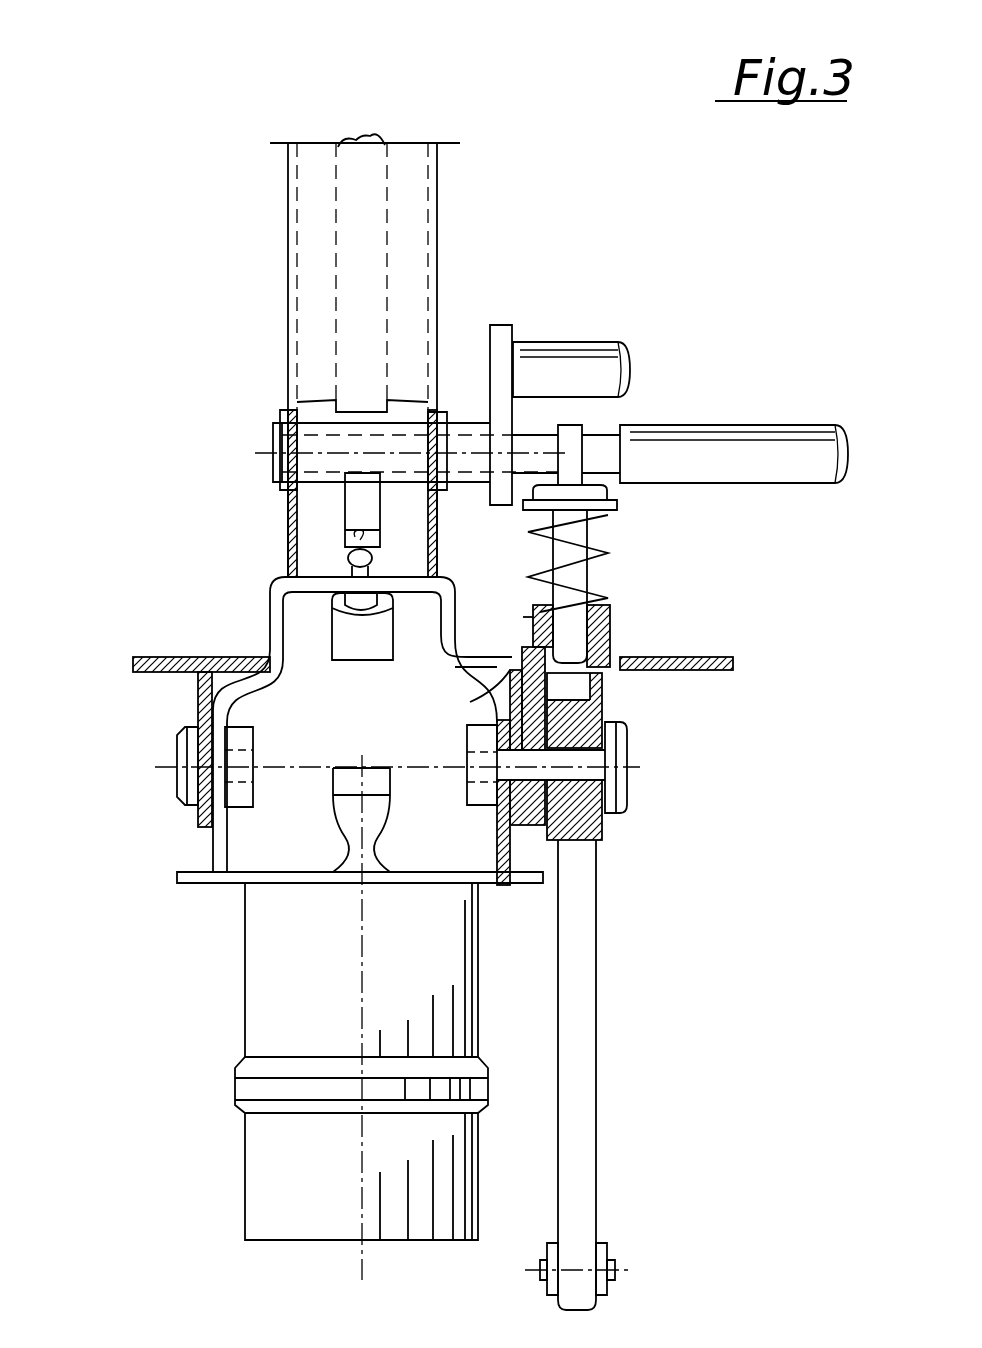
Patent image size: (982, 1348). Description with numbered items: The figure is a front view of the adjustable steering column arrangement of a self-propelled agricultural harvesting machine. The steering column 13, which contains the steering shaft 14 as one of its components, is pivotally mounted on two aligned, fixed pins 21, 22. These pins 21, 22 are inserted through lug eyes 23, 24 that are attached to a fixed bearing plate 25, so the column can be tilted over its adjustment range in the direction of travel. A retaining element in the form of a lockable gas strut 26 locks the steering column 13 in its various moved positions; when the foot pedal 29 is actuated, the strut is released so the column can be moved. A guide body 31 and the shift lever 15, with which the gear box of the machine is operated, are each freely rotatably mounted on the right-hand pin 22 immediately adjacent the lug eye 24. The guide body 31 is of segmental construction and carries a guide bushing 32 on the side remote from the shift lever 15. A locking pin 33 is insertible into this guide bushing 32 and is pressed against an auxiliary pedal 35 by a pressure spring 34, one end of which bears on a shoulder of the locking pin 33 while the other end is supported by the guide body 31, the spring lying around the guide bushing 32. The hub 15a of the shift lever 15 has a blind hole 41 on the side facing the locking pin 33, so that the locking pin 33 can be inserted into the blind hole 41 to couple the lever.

The steering column 13 is at (297, 218).
The steering shaft 14 is at (377, 133).
The foot pedal 29 is at (570, 378).
The auxiliary pedal 35 is at (808, 442).
The pressure spring 34 is at (570, 588).
The locking pin 33 is at (592, 572).
The guide bushing 32 is at (606, 608).
The guide body 31 is at (613, 645).
The lug eye 24 is at (480, 672).
The blind hole 41 is at (570, 688).
The pin 22 is at (603, 772).
The hub 15a is at (567, 798).
The shift lever 15 is at (578, 1142).
The gas strut 26 is at (350, 640).
The bearing plate 25 is at (175, 663).
The lug eye 23 is at (207, 813).
The pin 21 is at (193, 760).